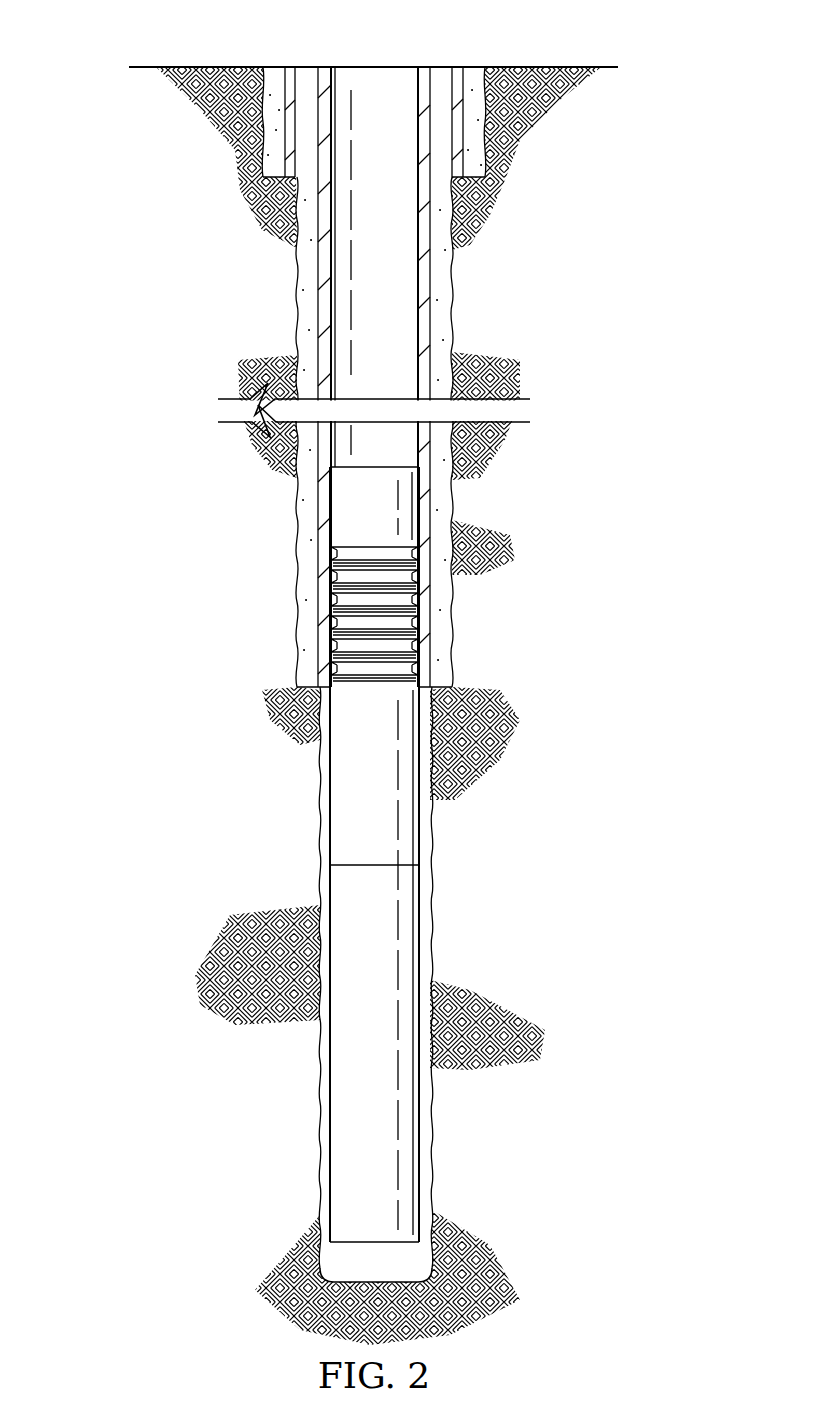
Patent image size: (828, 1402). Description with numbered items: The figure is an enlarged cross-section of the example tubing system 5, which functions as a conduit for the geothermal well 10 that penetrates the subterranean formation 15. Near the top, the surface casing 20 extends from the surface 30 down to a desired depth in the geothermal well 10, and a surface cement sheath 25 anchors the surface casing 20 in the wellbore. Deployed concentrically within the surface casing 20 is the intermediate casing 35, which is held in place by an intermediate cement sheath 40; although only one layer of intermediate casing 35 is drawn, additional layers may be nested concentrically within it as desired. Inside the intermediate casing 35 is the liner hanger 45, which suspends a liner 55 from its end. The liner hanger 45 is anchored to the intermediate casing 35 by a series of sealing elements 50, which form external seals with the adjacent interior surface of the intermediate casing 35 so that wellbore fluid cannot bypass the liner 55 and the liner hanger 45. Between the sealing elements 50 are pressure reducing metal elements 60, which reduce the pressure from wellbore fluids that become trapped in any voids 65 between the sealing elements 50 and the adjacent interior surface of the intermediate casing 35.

The tubing system 5 is at (198, 226).
The geothermal well 10 is at (523, 765).
The subterranean formation 15 is at (259, 989).
The surface casing 20 is at (457, 143).
The surface cement sheath 25 is at (475, 75).
The surface 30 is at (192, 67).
The intermediate casing 35 is at (323, 308).
The intermediate cement sheath 40 is at (303, 265).
The liner hanger 45 is at (340, 825).
The sealing elements 50 is at (348, 612).
The liner 55 is at (337, 1113).
The pressure reducing metal elements 60 is at (413, 600).
The voids 65 is at (415, 647).